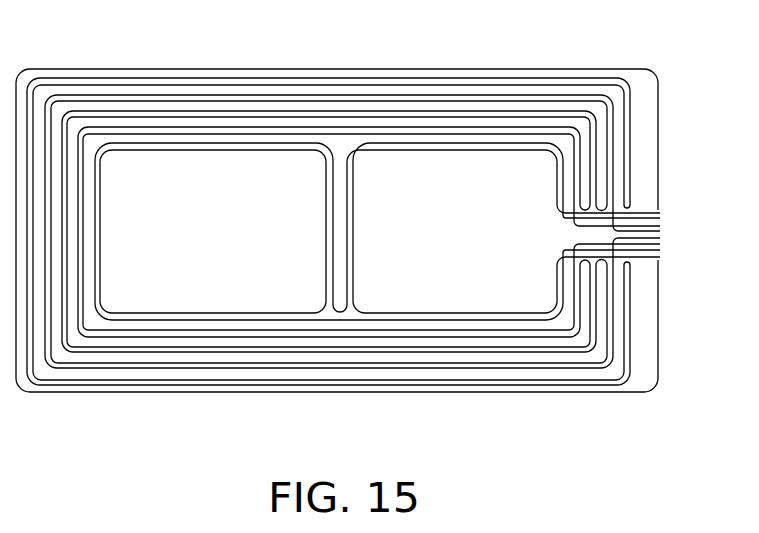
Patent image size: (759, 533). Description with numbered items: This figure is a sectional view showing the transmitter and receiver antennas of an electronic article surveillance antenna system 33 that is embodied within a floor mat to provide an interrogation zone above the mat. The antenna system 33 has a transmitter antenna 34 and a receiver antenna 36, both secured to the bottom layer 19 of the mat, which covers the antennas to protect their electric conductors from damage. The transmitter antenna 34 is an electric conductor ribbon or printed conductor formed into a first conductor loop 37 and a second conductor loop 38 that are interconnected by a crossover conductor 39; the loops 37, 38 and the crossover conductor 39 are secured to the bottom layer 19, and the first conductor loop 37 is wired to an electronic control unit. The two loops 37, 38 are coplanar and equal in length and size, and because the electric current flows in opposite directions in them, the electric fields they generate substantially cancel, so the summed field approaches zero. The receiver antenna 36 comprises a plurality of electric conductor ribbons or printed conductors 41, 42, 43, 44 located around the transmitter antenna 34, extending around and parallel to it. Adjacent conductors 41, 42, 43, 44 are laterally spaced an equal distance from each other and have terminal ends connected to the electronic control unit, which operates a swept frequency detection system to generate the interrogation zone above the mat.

The bottom layer 19 is at (650, 123).
The electronic article surveillance antenna system 33 is at (500, 65).
The transmitter antenna 34 is at (277, 151).
The receiver antenna 36 is at (167, 80).
The first conductor loop 37 is at (465, 153).
The second conductor loop 38 is at (163, 312).
The crossover conductor 39 is at (353, 308).
The electric conductor 41 is at (102, 383).
The electric conductor 42 is at (172, 362).
The electric conductor 43 is at (247, 347).
The electric conductor 44 is at (386, 338).